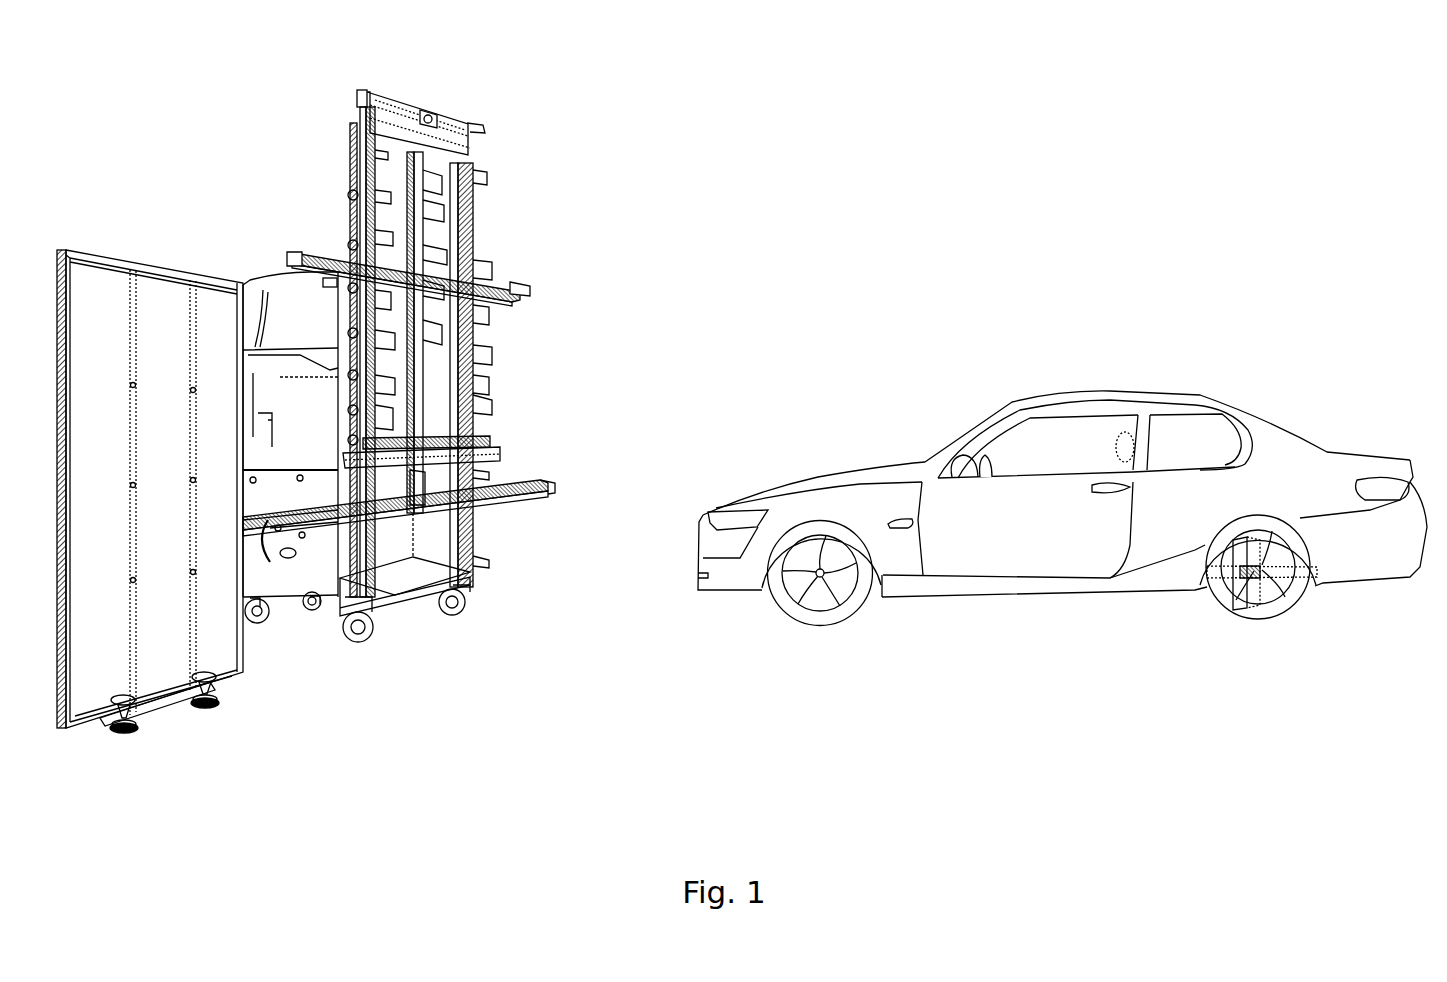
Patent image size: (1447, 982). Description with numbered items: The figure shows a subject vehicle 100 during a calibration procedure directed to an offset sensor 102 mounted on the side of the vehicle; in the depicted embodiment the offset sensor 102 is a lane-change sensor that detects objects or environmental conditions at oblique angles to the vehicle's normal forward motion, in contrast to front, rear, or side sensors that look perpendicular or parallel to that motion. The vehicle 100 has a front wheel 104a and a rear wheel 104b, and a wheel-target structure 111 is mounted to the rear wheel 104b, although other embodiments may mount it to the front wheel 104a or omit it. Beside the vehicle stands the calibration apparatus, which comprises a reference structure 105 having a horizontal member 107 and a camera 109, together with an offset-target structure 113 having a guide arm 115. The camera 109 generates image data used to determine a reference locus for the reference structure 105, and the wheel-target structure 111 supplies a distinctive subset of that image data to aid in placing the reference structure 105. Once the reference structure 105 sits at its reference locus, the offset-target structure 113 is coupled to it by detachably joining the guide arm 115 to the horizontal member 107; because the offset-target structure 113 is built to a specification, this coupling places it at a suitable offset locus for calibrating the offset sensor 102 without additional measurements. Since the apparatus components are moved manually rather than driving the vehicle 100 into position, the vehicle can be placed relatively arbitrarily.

The vehicle 100 is at (902, 412).
The offset sensor 102 is at (918, 522).
The front wheel 104a is at (770, 590).
The rear wheel 104b is at (1212, 590).
The reference structure 105 is at (280, 176).
The horizontal member 107 is at (545, 492).
The camera 109 is at (432, 122).
The wheel-target structure 111 is at (1245, 600).
The offset-target structure 113 is at (228, 668).
The guide arm 115 is at (290, 550).